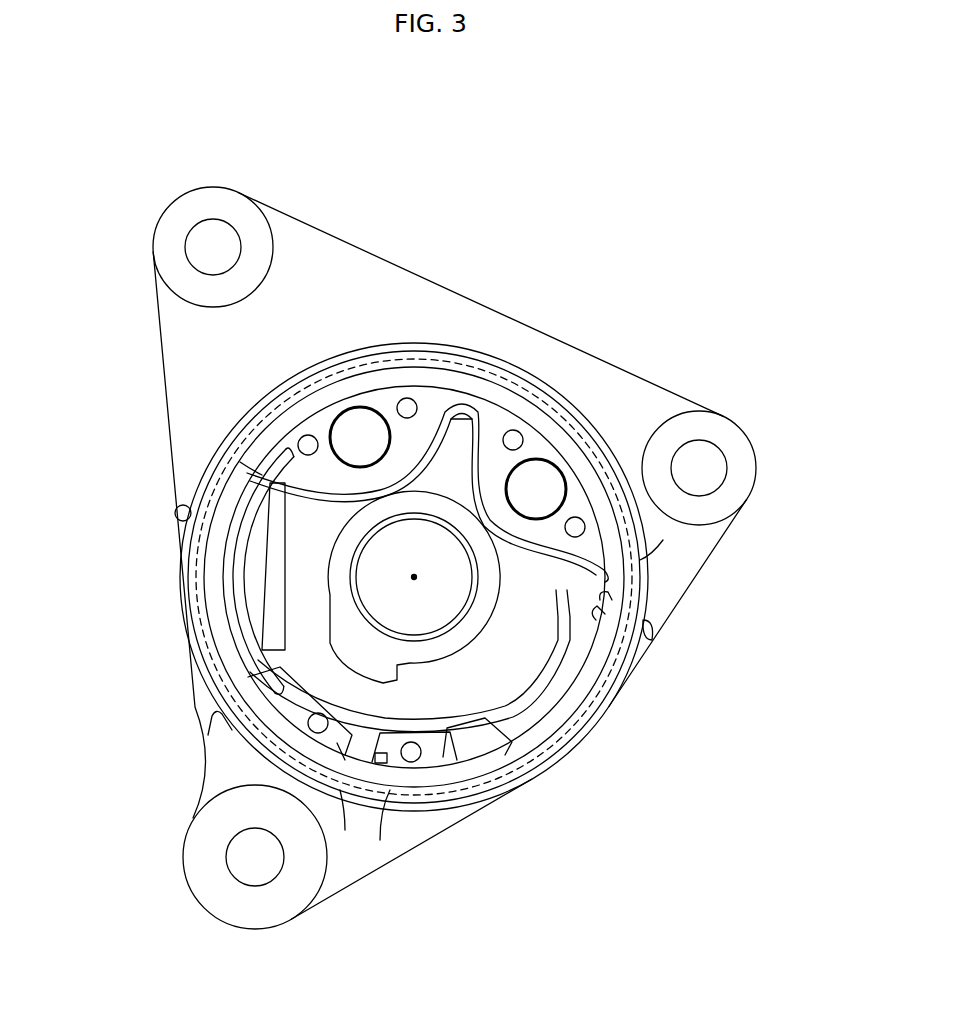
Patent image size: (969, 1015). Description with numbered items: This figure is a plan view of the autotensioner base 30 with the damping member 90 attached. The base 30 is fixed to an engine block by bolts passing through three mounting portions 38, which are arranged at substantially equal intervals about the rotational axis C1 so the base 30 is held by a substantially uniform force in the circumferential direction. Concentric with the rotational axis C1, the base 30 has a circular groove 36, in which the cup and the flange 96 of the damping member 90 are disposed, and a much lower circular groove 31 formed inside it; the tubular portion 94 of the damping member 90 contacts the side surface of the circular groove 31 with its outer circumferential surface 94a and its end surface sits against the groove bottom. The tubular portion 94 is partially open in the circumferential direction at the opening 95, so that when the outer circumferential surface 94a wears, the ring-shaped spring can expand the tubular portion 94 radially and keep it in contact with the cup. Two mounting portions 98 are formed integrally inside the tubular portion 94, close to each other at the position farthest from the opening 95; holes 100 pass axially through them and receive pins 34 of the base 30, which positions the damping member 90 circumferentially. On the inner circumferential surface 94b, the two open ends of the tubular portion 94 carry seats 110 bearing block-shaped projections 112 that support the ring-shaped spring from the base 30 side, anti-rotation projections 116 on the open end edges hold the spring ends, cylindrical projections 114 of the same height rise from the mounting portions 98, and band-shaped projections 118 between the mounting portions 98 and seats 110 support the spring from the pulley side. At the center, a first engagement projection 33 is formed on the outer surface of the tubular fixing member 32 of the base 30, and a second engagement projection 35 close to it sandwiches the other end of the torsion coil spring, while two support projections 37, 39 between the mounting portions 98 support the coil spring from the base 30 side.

The base 30 is at (190, 894).
The circular groove 31 is at (478, 770).
The tubular fixing member 32 is at (543, 777).
The first engagement projection 33 is at (340, 642).
The pin 34 is at (353, 430).
The second engagement projection 35 is at (265, 598).
The circular groove 36 is at (440, 784).
The support projection 37 is at (570, 565).
The mounting portion 38 is at (192, 214).
The support projection 39 is at (455, 438).
The damping member 90 is at (190, 508).
The tubular portion 94 is at (617, 572).
The outer circumferential surface 94a is at (647, 638).
The inner circumferential surface 94b is at (637, 610).
The opening 95 is at (340, 770).
The flange 96 is at (205, 466).
The mounting portion 98 is at (273, 477).
The hole 100 is at (350, 427).
The seat 110 is at (250, 723).
The block-shaped projection 112 is at (250, 687).
The cylindrical projection 114 is at (407, 405).
The anti-rotation projection 116 is at (252, 768).
The band-shaped projection 118 is at (227, 553).
The rotational axis C1 is at (416, 578).